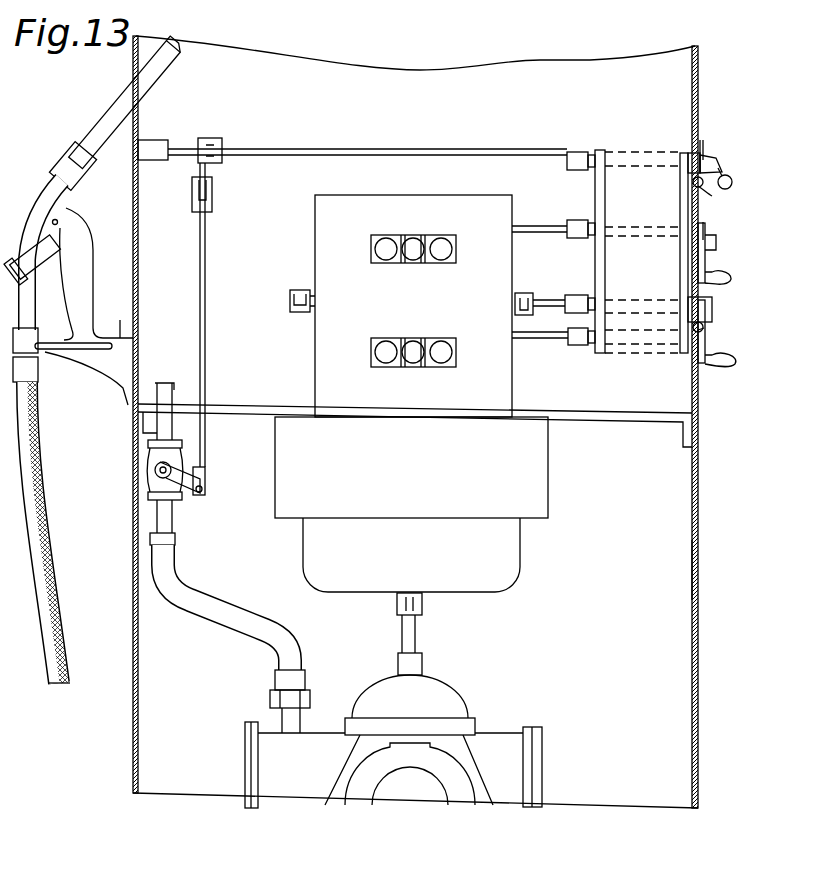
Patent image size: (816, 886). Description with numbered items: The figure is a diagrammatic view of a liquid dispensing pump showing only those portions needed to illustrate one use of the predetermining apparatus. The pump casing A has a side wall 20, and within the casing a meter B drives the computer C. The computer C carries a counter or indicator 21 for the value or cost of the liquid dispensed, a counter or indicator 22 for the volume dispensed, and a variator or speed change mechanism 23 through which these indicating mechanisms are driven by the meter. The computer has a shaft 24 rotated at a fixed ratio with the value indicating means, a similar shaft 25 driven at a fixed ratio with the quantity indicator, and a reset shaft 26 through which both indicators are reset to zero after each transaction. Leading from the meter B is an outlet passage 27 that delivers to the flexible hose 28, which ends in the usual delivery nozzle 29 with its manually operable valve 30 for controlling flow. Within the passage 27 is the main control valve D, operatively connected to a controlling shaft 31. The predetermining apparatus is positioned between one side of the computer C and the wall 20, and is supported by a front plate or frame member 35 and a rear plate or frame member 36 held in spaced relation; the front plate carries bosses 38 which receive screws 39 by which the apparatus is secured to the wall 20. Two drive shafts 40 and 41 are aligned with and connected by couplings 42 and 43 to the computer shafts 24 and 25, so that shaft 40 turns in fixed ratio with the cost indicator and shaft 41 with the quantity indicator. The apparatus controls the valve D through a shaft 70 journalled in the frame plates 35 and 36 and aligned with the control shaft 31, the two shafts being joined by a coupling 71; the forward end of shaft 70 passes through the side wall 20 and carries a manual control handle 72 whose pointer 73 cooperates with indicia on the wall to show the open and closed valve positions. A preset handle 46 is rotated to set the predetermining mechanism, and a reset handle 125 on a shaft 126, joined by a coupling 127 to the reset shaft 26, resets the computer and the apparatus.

The side wall 20 is at (698, 463).
The pump casing A is at (698, 530).
The meter B is at (410, 800).
The computer C is at (312, 350).
The main control valve D is at (146, 461).
The counter or indicator 21 is at (414, 238).
The counter or indicator 22 is at (414, 341).
The variator or speed change mechanism 23 is at (553, 497).
The shaft 24 is at (533, 227).
The shaft 25 is at (540, 340).
The reset shaft 26 is at (538, 298).
The outlet passage 27 is at (197, 583).
The flexible hose 28 is at (50, 527).
The delivery nozzle 29 is at (101, 130).
The manually operable valve 30 is at (60, 240).
The controlling shaft 31 is at (250, 148).
The front plate or frame member 35 is at (684, 153).
The rear plate or frame member 36 is at (606, 152).
The latch 38 is at (692, 184).
The screws 39 is at (704, 192).
The drive shaft 40 is at (591, 222).
The drive shaft 41 is at (591, 347).
The coupling 42 is at (572, 222).
The coupling 43 is at (570, 347).
The preset handle 46 is at (725, 274).
The shaft 70 is at (594, 153).
The coupling 71 is at (580, 151).
The manual control handle 72 is at (732, 178).
The pointer 73 is at (703, 145).
The reset handle 125 is at (737, 360).
The shaft 126 is at (596, 303).
The coupling 127 is at (574, 294).